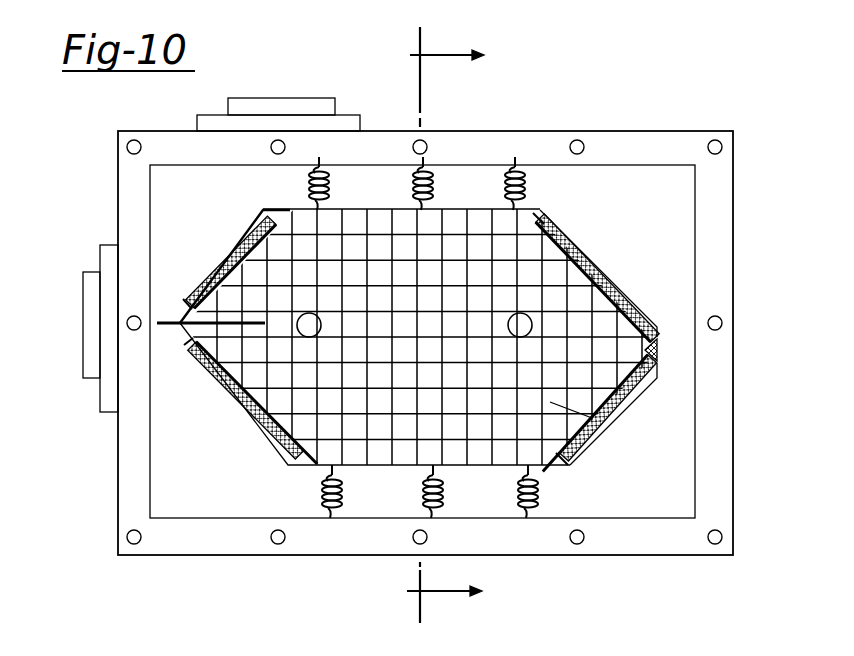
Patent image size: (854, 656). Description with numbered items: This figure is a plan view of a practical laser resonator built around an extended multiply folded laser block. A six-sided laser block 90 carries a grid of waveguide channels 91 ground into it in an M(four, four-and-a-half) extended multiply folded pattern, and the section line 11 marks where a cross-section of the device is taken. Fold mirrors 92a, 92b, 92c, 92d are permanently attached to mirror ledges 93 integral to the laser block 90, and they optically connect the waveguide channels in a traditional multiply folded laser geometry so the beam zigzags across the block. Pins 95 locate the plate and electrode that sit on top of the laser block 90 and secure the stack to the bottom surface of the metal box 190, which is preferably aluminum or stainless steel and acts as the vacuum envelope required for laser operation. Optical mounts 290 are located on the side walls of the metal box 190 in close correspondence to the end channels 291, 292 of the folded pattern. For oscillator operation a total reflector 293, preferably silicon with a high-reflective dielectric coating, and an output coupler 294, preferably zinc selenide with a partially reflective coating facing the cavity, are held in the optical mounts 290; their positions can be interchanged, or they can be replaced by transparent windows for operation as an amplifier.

The metal box 190 is at (718, 255).
The optical mounts 290 is at (353, 122).
The total reflector 293 is at (267, 108).
The output coupler 294 is at (88, 312).
The section line 11- 11 is at (463, 325).
The grid of waveguide channels 91 is at (298, 297).
The end channel 292 is at (288, 208).
The fold mirror 92a is at (214, 258).
The fold mirror 92b is at (233, 413).
The fold mirror 92c is at (588, 258).
The fold mirror 92d is at (617, 412).
The laser block 90 is at (605, 427).
The end channel 291 is at (178, 328).
The mirror ledges 93 is at (183, 302).
The pins 95 is at (515, 326).